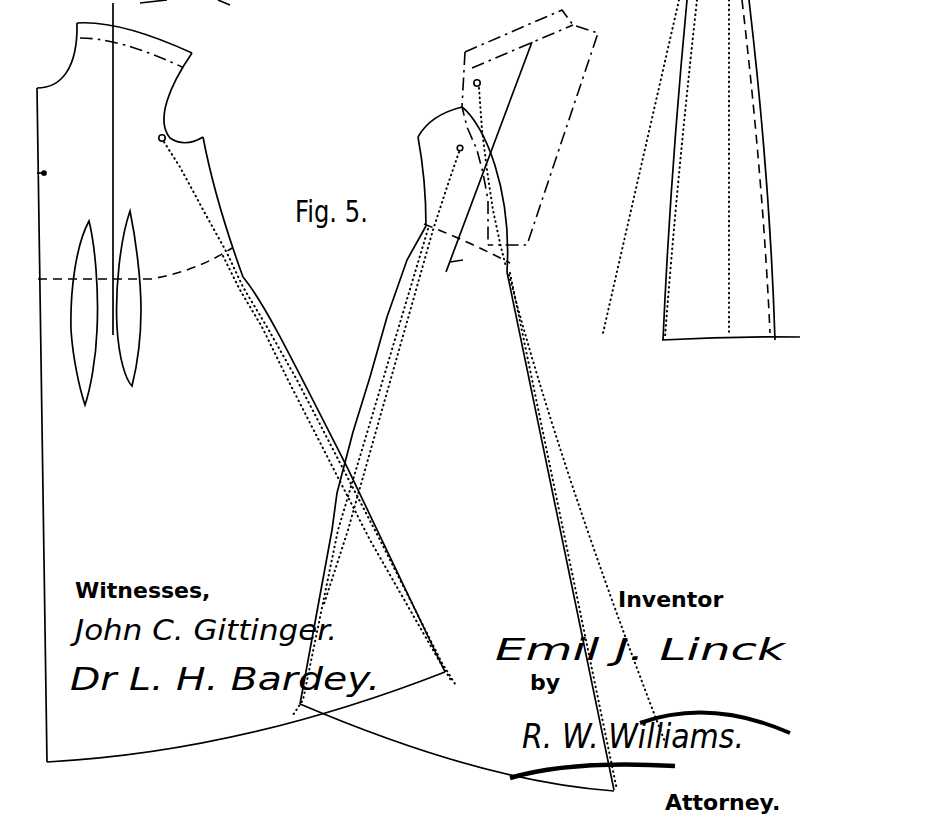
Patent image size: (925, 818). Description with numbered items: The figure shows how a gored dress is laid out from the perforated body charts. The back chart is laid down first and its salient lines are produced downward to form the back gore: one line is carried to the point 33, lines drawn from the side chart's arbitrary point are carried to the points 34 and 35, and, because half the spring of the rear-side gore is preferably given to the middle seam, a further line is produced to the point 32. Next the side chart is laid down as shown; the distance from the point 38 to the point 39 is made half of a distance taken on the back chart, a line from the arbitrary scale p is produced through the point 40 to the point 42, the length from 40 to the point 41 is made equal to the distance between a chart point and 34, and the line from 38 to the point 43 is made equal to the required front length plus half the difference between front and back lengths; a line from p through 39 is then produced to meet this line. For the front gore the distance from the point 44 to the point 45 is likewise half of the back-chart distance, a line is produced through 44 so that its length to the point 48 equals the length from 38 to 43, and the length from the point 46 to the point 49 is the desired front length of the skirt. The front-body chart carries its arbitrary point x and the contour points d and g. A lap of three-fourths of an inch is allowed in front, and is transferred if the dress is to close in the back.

The back middle-seam gore point 32 is at (763, 180).
The back gore seam point 33 is at (732, 180).
The rear-side gore point 34 is at (727, 180).
The rear-side gore outer point 35 is at (619, 337).
The side-gore waist point 38 is at (454, 200).
The side-gore seam point 39 is at (373, 465).
The side-gore hip point 40 is at (494, 190).
The side-gore lower point 41 is at (467, 536).
The side-gore extended point 42 is at (600, 530).
The side-gore front-length point 43 is at (363, 467).
The front-gore waist point 44 is at (222, 255).
The front-gore seam point 45 is at (337, 462).
The front skirt top point 46 is at (38, 279).
The front-gore lower point 48 is at (336, 406).
The front hem point 49 is at (238, 727).
The arbitrary point x is at (47, 173).
The front contour point d is at (155, 140).
The front contour point g is at (490, 171).
The arbitrary scale p is at (393, 374).